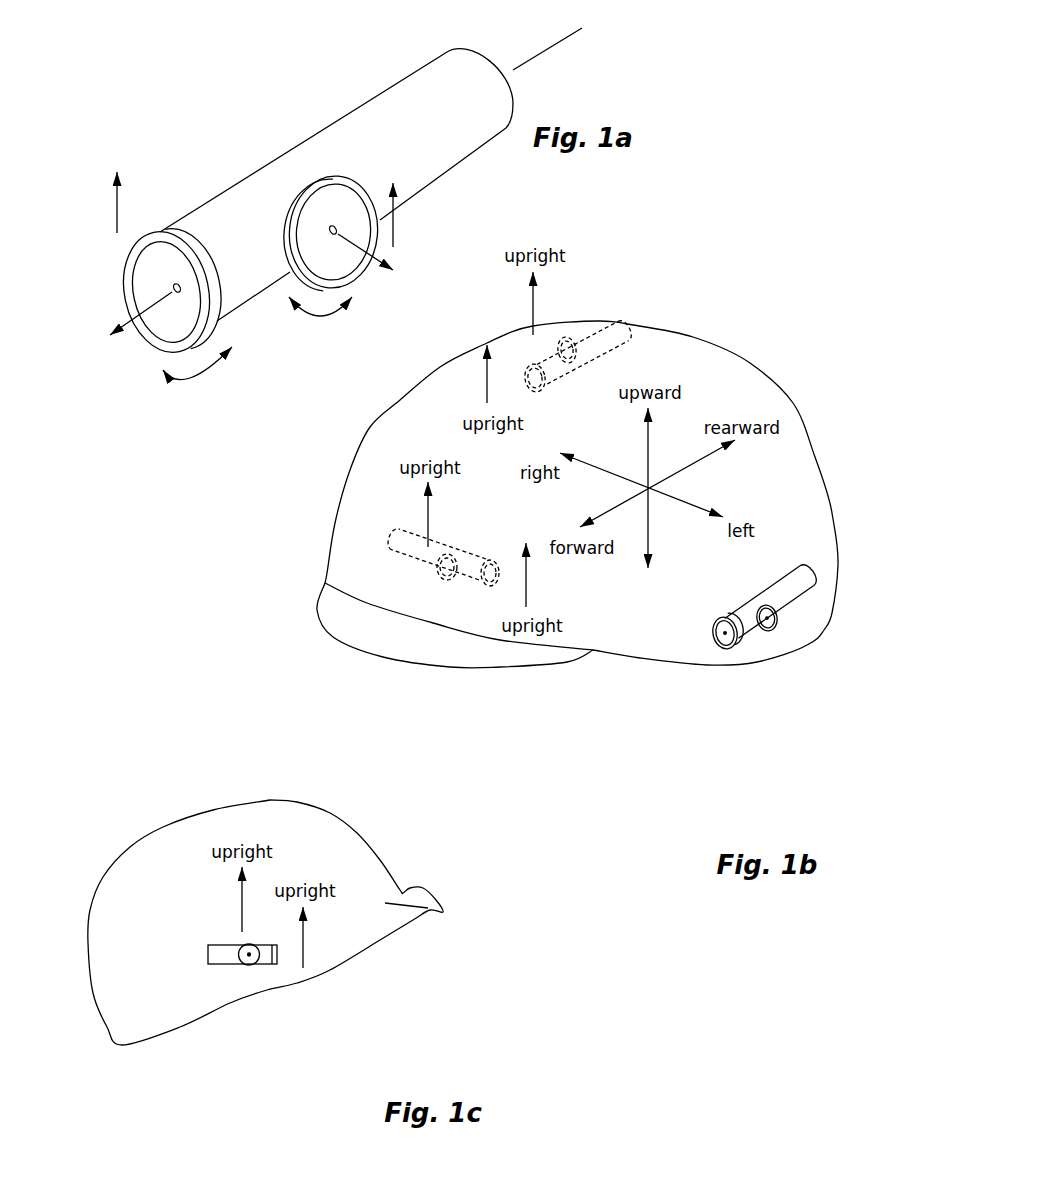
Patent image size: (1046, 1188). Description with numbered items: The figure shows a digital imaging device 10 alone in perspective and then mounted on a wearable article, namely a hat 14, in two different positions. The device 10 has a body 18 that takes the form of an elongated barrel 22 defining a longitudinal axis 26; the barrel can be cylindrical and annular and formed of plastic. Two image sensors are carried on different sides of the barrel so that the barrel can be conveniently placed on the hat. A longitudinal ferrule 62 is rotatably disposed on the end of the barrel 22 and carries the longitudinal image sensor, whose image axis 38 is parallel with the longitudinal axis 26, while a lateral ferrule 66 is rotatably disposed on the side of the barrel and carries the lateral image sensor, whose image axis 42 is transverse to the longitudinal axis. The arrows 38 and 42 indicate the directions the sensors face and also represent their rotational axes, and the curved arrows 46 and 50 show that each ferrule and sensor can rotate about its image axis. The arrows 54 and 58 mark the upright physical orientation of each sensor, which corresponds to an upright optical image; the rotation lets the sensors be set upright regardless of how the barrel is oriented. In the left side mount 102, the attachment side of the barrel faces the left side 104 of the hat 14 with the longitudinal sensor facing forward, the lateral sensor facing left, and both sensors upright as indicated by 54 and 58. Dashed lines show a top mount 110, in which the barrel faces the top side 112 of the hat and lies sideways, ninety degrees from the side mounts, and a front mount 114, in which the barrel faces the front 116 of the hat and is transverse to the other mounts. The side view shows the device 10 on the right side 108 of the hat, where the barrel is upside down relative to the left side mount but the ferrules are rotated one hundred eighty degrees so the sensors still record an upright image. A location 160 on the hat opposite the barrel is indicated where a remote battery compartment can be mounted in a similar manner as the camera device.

In FIG. 1A, the digital imaging device 10 is at (390, 190).
In FIG. 1B, the digital imaging device 10 is at (750, 597).
In FIG. 1C, the digital imaging device 10 is at (217, 965).
In FIG. 1B, the hat 14 is at (368, 432).
In FIG. 1C, the hat 14 is at (446, 906).
In FIG. 1A, the body 18 is at (336, 185).
In FIG. 1A, the elongated barrel 22 is at (392, 102).
In FIG. 1A, the longitudinal axis 26 is at (556, 46).
In FIG. 1A, the longitudinal image axis 38 is at (133, 327).
In FIG. 1A, the lateral image axis 42 is at (368, 273).
In FIG. 1A, the rotation arrow of longitudinal image sensor 46 is at (207, 380).
In FIG. 1A, the rotation arrow of lateral image sensor 50 is at (317, 317).
In FIG. 1A, the upright orientation of longitudinal image sensor 54 is at (120, 208).
In FIG. 1A, the upright orientation of lateral image sensor 58 is at (395, 237).
In FIG. 1A, the longitudinal ferrule 62 is at (172, 291).
In FIG. 1A, the lateral ferrule 66 is at (330, 231).
In FIG. 1B, the left side mount 102 is at (808, 618).
In FIG. 1B, the left side of hat 104 is at (780, 517).
In FIG. 1C, the right side of hat 108 is at (203, 913).
In FIG. 1B, the top mount 110 is at (632, 297).
In FIG. 1B, the top side of hat 112 is at (633, 365).
In FIG. 1B, the front mount 114 is at (370, 567).
In FIG. 1B, the front of hat 116 is at (377, 507).
In FIG. 1C, the battery compartment mounting location 160 is at (270, 985).